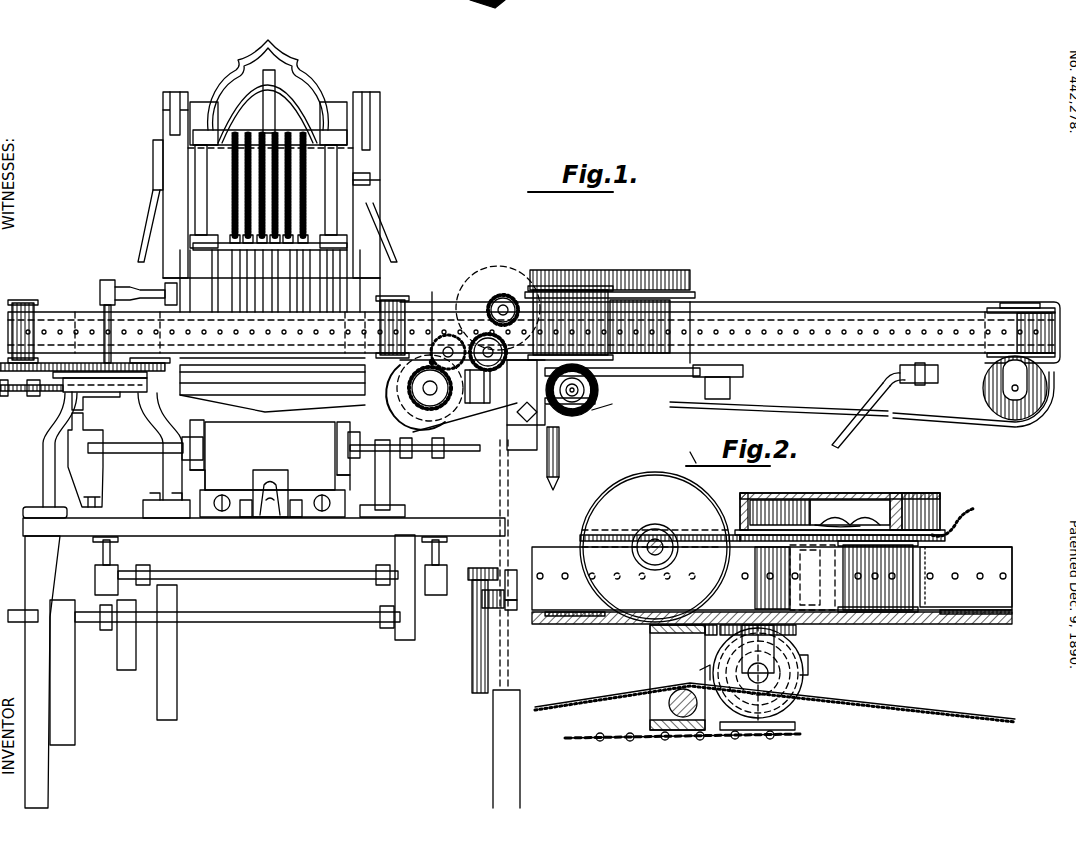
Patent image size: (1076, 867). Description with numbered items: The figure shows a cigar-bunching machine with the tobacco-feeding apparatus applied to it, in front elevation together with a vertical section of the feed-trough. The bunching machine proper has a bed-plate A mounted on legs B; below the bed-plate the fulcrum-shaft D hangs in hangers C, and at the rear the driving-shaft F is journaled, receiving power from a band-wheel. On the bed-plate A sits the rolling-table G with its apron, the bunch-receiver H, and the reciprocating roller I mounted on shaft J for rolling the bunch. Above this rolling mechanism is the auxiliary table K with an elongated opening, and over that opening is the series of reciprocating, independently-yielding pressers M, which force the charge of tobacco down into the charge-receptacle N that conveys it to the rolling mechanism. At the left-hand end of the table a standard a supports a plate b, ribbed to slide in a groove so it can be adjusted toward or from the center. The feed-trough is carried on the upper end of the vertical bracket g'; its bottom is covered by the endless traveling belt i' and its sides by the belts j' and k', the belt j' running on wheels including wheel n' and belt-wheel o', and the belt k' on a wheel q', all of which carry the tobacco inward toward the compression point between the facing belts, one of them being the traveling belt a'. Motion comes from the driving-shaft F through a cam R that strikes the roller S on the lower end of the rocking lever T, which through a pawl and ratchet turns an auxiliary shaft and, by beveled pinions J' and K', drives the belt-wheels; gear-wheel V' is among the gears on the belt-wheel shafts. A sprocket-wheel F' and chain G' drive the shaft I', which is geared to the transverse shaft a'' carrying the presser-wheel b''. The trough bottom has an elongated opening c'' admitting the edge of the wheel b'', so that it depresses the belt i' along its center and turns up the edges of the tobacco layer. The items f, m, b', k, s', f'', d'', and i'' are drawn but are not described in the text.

In FIG. 1, the pressers M is at (267, 176).
In FIG. 1, the traveling belt a' is at (534, 332).
In FIG. 1, the standard a is at (99, 401).
In FIG. 1, the pressure roller f is at (130, 321).
In FIG. 1, the auxiliary table K is at (182, 372).
In FIG. 1, the charge-receptacle N is at (272, 394).
In FIG. 1, the plate b is at (100, 391).
In FIG. 1, the shaft J is at (135, 438).
In FIG. 1, the reciprocating roller I is at (266, 455).
In FIG. 1, the bunch-receiver H is at (272, 470).
In FIG. 1, the rolling-table G is at (280, 499).
In FIG. 1, the bed-plate A is at (264, 527).
In FIG. 1, the legs B is at (272, 624).
In FIG. 1, the hangers C is at (270, 583).
In FIG. 1, the fulcrum-shaft D is at (258, 569).
In FIG. 1, the driving-shaft F is at (204, 623).
In FIG. 1, the shaft I' is at (436, 318).
In FIG. 1, the gear m is at (451, 383).
In FIG. 1, the presser-wheel b'' is at (498, 303).
In FIG. 2, the presser-wheel b'' is at (655, 547).
In FIG. 1, the roller b' is at (384, 327).
In FIG. 1, the belt-wheel o' is at (610, 315).
In FIG. 2, the belt-wheel o' is at (850, 498).
In FIG. 1, the beveled pinion-wheel K' is at (625, 405).
In FIG. 1, the beveled pinion-wheel J' is at (602, 410).
In FIG. 1, the traveling belt j' is at (800, 325).
In FIG. 1, the wheel n' is at (1021, 320).
In FIG. 1, the lever k is at (885, 405).
In FIG. 1, the traveling belt i' is at (795, 504).
In FIG. 1, the vertical bracket g' is at (545, 459).
In FIG. 1, the roller S is at (492, 578).
In FIG. 1, the cam R is at (476, 693).
In FIG. 1, the rocking lever T is at (518, 620).
In FIG. 2, the traveling belt k' is at (772, 585).
In FIG. 2, the transverse shaft a'' is at (667, 527).
In FIG. 2, the gear-wheel V' is at (762, 504).
In FIG. 2, the spring s' is at (780, 497).
In FIG. 2, the roller f'' is at (923, 499).
In FIG. 2, the cord d'' is at (957, 513).
In FIG. 2, the belt-wheel q' is at (836, 576).
In FIG. 2, the elongated opening c'' is at (663, 677).
In FIG. 2, the sprocket-wheel F' is at (772, 672).
In FIG. 2, the cord i'' is at (775, 698).
In FIG. 2, the chain G' is at (682, 738).